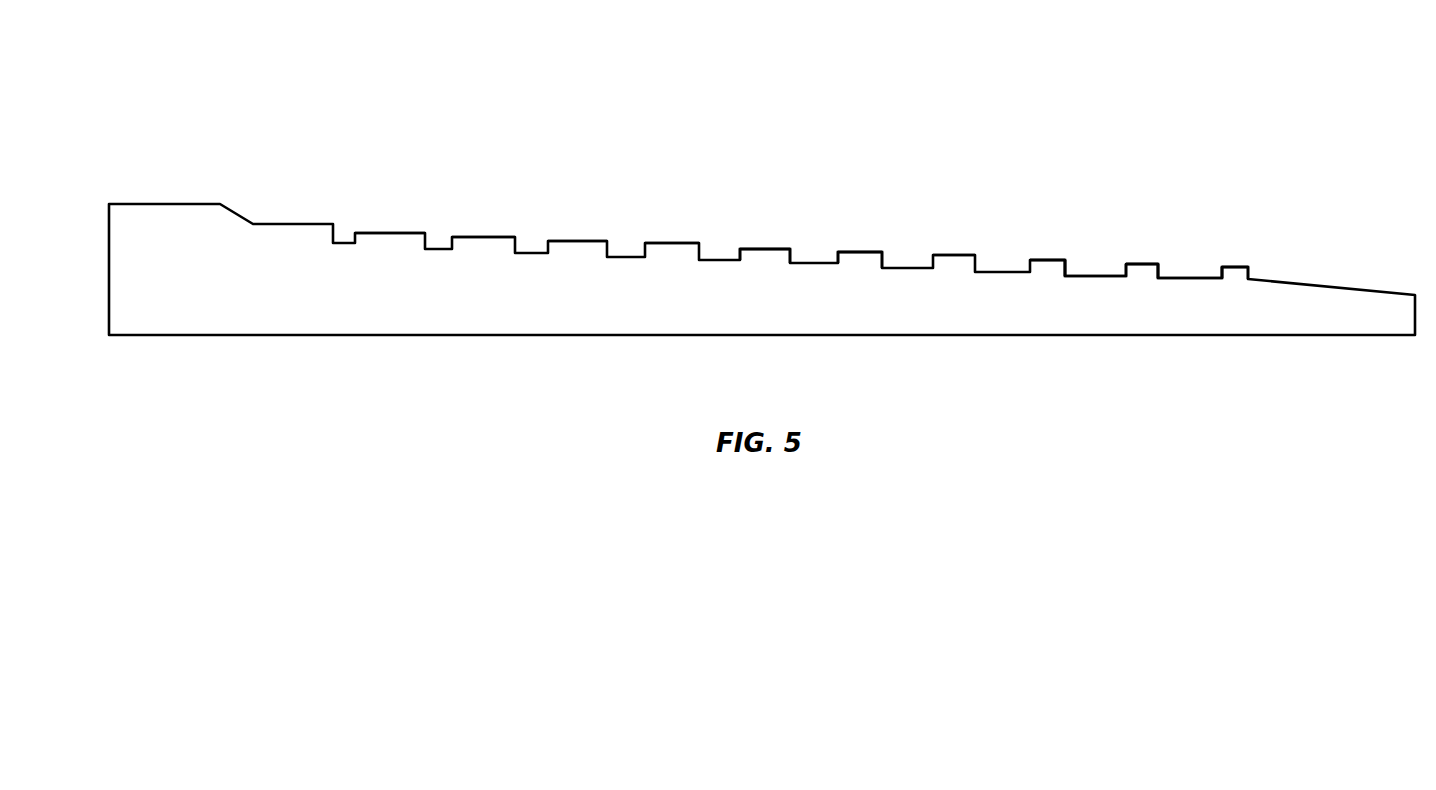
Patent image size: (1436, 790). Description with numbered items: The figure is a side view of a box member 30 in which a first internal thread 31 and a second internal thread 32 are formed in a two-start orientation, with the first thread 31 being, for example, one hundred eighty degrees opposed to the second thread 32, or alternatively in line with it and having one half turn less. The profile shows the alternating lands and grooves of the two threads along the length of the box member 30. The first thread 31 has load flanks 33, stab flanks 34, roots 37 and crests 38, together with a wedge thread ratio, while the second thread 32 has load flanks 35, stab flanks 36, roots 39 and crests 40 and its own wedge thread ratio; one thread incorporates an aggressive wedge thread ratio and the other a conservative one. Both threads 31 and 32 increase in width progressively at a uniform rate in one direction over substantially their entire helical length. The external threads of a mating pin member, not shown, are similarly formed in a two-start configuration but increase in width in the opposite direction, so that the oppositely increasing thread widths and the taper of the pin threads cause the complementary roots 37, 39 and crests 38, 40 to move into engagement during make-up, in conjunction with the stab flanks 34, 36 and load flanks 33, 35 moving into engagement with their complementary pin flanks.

The box member 30 is at (159, 310).
The first internal thread 31 is at (1235, 256).
The second internal thread 32 is at (1142, 275).
The load flanks 33 is at (1223, 270).
The stab flanks 34 is at (1067, 261).
The load flanks 35 is at (1125, 277).
The stab flanks 36 is at (1158, 273).
The roots 37 is at (1085, 275).
The crests 38 is at (870, 250).
The roots 39 is at (1172, 278).
The crests 40 is at (755, 247).